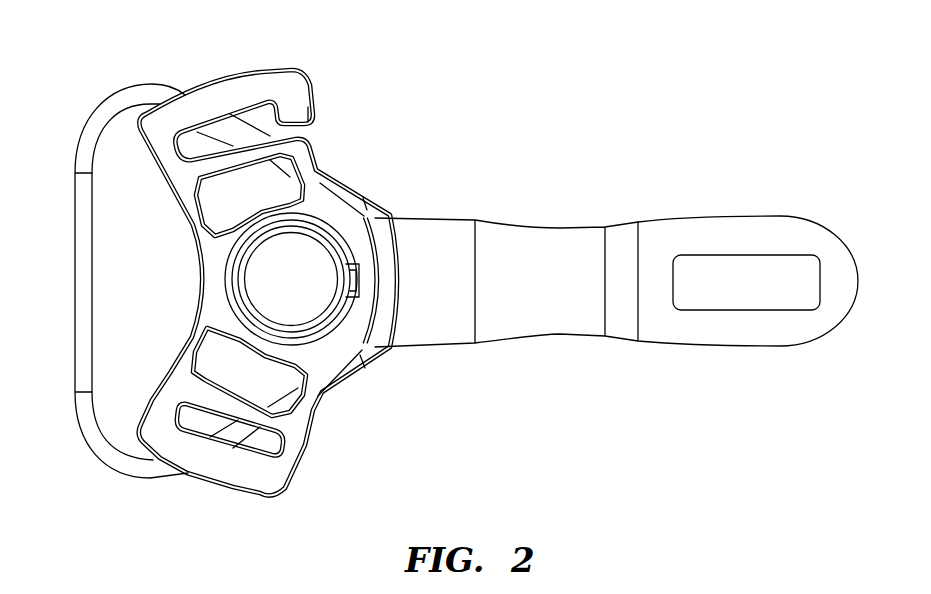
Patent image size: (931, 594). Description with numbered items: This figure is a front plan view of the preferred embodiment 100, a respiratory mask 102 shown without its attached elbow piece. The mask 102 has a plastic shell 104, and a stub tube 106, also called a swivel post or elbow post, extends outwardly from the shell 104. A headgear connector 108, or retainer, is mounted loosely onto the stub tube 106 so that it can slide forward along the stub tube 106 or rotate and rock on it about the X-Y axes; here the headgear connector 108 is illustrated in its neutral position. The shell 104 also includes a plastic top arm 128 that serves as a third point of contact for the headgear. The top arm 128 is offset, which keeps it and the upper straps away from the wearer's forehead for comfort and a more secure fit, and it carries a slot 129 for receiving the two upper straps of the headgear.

The preferred embodiment 100 is at (458, 258).
The respiratory mask 102 is at (118, 406).
The plastic shell 104 is at (125, 155).
The stub tube 106 is at (303, 349).
The headgear connector 108 is at (233, 98).
The top arm 128 is at (525, 258).
The slot 129 is at (772, 289).